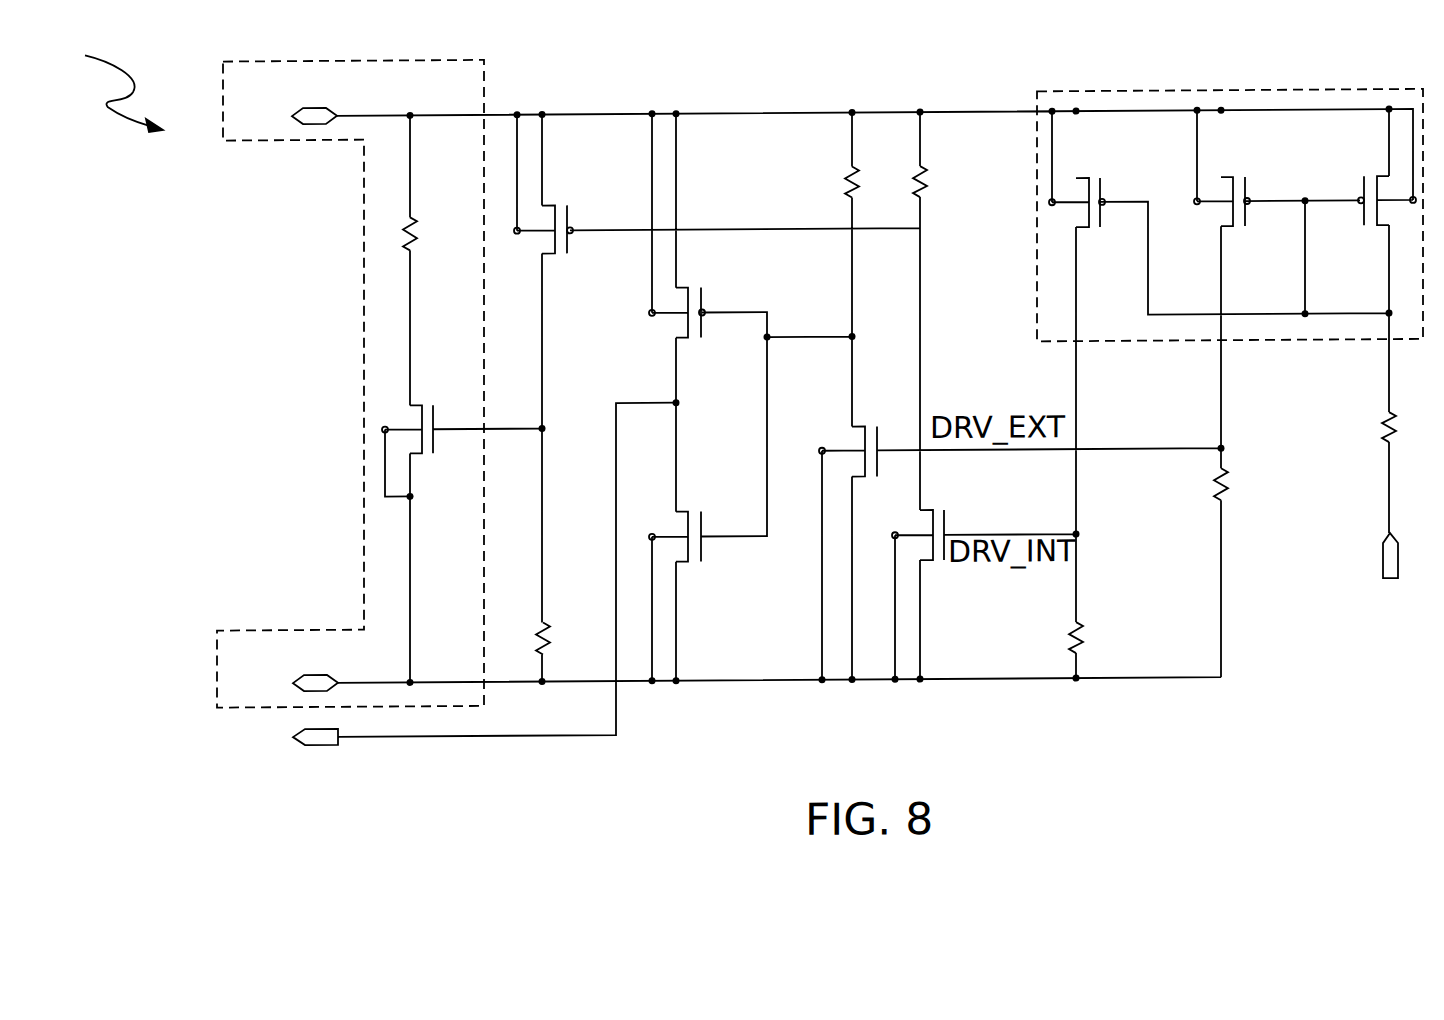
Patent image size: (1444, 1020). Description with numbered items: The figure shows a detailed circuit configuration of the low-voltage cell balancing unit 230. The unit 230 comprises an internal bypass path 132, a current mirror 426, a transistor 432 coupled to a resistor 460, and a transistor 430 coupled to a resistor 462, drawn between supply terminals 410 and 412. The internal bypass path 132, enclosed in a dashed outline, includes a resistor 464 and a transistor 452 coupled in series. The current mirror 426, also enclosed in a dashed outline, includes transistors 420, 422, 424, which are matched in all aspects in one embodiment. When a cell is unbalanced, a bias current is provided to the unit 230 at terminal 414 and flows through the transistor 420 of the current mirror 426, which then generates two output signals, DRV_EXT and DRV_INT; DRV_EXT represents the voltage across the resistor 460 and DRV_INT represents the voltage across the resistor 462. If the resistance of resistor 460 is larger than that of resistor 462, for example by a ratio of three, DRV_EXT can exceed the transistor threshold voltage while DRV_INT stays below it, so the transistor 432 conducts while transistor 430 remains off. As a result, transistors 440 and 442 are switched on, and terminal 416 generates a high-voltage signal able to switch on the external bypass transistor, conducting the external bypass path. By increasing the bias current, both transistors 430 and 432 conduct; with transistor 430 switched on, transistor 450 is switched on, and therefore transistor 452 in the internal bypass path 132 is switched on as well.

The internal bypass path 132 is at (363, 382).
The low-voltage cell balancing unit 230 is at (146, 115).
The terminal 410 is at (285, 118).
The terminal 412 is at (285, 686).
The terminal 414 is at (1393, 514).
The terminal 416 is at (454, 580).
The transistor 420 is at (1360, 214).
The transistor 422 is at (1287, 206).
The transistor 424 is at (1137, 205).
The current mirror 426 is at (1287, 348).
The transistor 430 is at (947, 531).
The transistor 432 is at (877, 448).
The transistor 440 is at (703, 312).
The transistor 442 is at (703, 554).
The transistor 450 is at (597, 232).
The transistor 452 is at (437, 430).
The resistor 460 is at (1230, 510).
The resistor 462 is at (1083, 659).
The resistor 464 is at (417, 228).